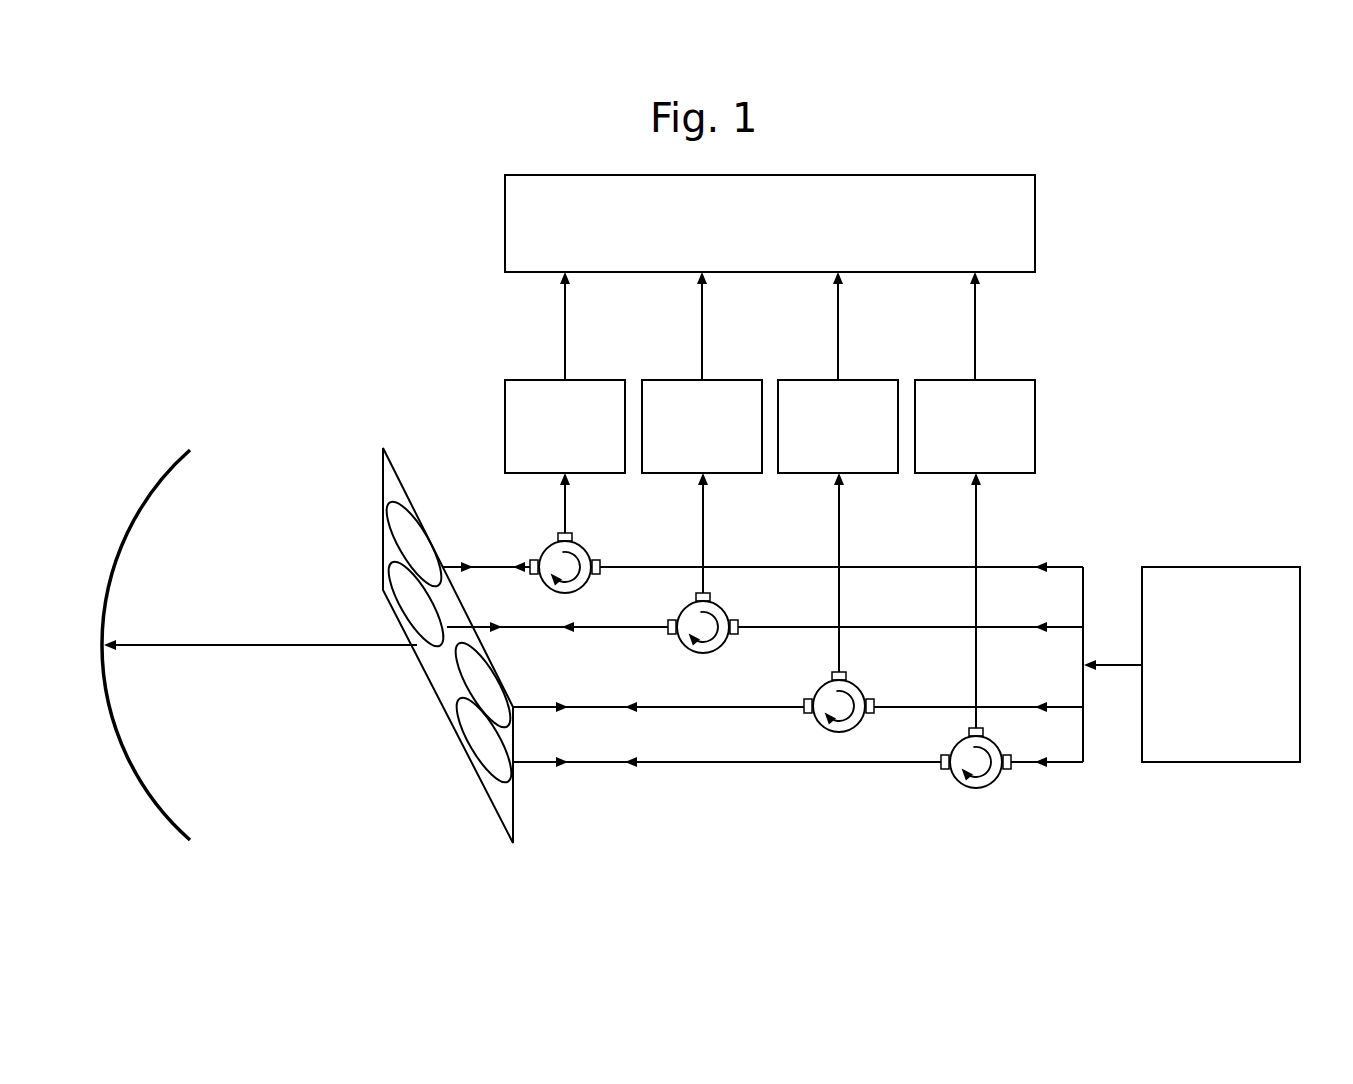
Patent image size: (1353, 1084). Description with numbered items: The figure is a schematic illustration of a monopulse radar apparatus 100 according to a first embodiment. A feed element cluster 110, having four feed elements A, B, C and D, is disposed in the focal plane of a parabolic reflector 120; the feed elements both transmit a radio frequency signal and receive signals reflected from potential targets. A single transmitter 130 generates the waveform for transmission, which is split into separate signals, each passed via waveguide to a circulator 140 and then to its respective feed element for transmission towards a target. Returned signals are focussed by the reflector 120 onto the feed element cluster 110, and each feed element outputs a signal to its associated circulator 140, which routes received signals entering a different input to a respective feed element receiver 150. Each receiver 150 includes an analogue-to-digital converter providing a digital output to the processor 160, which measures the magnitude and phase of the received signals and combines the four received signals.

The monopulse radar apparatus 100 is at (1196, 294).
The feed element cluster 110 is at (390, 490).
The parabolic reflector 120 is at (163, 813).
The transmitter 130 is at (1213, 740).
The circulator 140 is at (548, 552).
The feed element receiver 150 is at (513, 425).
The processor 160 is at (1010, 222).